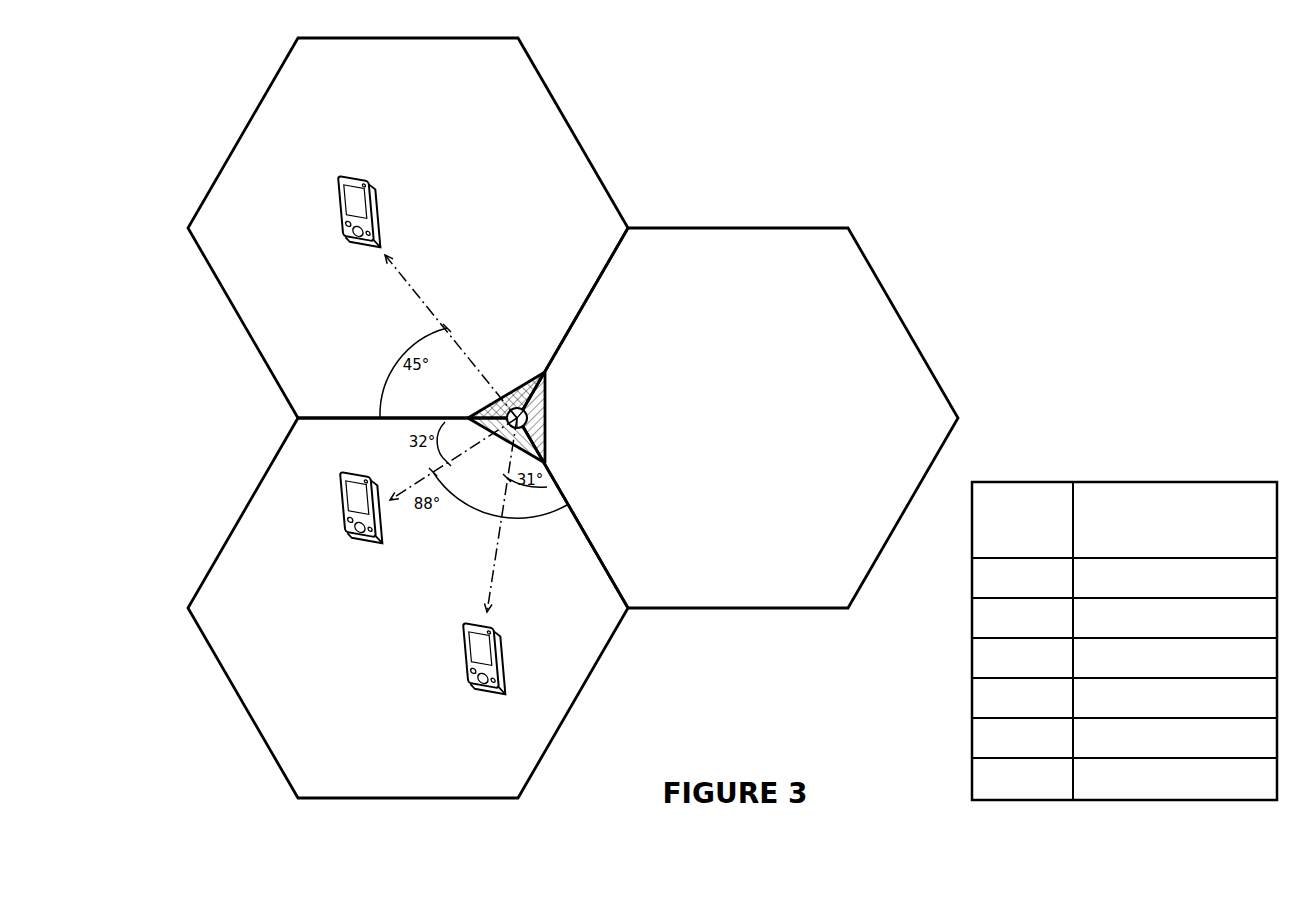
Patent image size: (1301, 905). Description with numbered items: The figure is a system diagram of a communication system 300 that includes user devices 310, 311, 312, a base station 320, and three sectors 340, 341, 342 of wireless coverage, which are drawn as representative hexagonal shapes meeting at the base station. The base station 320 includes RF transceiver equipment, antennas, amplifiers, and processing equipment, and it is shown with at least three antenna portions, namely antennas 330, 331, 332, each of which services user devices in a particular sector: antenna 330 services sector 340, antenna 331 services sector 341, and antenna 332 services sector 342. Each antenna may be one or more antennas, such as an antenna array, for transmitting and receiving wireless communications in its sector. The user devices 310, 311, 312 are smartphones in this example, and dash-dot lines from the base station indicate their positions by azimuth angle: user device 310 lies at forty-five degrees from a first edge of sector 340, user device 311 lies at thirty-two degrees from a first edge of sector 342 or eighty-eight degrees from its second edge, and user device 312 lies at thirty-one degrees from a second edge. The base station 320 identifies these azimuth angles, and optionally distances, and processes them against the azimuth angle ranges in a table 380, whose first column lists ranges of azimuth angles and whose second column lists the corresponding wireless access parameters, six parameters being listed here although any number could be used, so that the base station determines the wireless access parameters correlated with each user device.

The communication system 300 is at (906, 117).
The user device 310 is at (340, 208).
The user device 311 is at (342, 504).
The user device 312 is at (465, 659).
The base station 320 is at (545, 412).
The antenna 330 is at (543, 371).
The antenna 331 is at (546, 441).
The antenna 332 is at (508, 441).
The sector 340 is at (408, 228).
The sector 341 is at (738, 418).
The sector 342 is at (408, 608).
The table 380 is at (1175, 481).